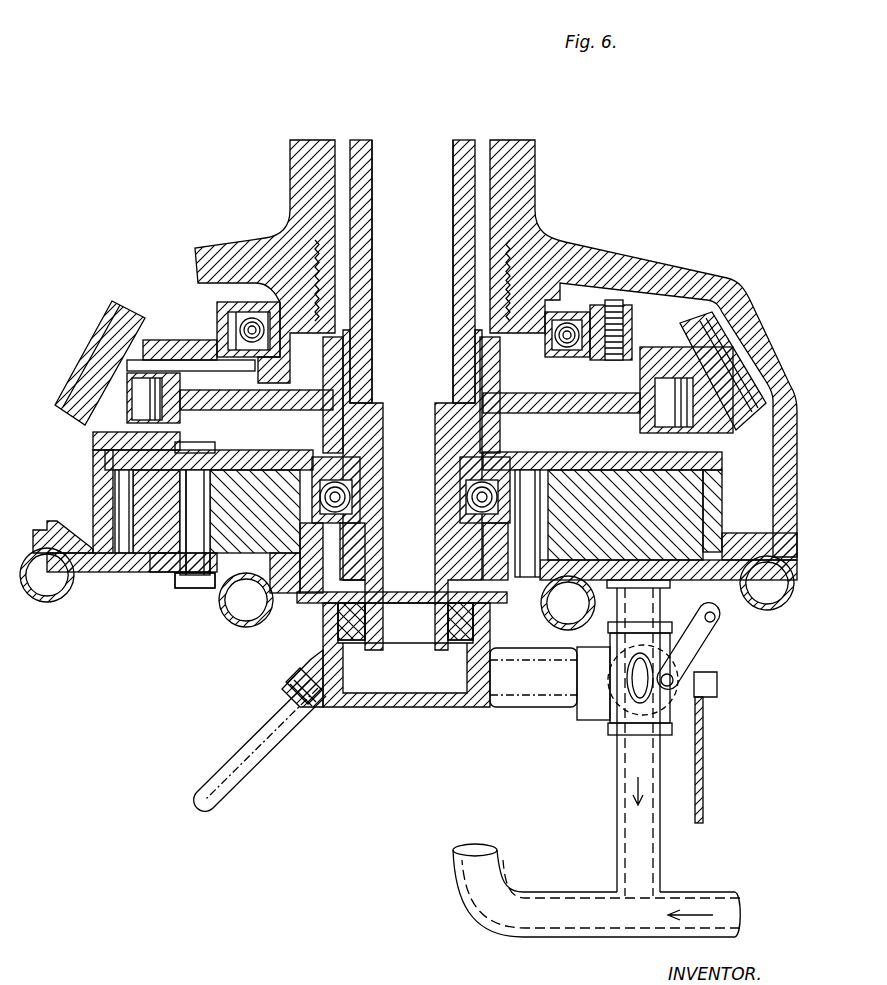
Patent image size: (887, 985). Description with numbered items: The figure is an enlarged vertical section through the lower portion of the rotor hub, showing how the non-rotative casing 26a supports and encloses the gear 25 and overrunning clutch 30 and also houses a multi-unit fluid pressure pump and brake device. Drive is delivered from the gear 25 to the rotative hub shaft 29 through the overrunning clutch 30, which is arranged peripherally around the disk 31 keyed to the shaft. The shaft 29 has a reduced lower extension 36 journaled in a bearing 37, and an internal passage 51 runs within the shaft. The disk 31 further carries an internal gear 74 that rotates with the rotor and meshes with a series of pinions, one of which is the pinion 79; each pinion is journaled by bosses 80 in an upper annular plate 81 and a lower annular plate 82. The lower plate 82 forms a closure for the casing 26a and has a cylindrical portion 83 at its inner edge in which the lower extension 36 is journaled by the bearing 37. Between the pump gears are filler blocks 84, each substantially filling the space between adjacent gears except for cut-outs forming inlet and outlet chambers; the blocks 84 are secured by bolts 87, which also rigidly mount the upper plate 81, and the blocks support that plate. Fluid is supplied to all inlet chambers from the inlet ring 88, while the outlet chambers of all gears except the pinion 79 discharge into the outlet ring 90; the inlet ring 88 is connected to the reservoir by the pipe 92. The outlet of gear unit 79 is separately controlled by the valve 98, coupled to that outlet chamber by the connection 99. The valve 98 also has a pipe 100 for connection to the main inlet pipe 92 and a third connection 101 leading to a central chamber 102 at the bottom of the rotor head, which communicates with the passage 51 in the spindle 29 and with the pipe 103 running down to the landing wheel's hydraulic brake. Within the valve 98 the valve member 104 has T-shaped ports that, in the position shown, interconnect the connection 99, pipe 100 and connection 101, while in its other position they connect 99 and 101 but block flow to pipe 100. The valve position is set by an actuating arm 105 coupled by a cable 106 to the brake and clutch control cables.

The non-rotative casing 26a is at (683, 277).
The rotative hub shaft 29 is at (372, 237).
The internal passage 51 is at (372, 297).
The bearing 37 is at (362, 480).
The reduced lower extension 36 is at (380, 504).
The gear 25 is at (97, 347).
The overrunning clutch 30 is at (135, 405).
The disk 31 is at (267, 410).
The bosses 80 is at (597, 456).
The internal gear 74 is at (118, 488).
The filler blocks 84 is at (150, 540).
The upper annular plate 81 is at (255, 460).
The pinion 79 is at (670, 512).
The outlet ring 90 is at (35, 597).
The inlet ring 88 is at (248, 627).
The lower annular plate 82 is at (163, 562).
The bolts 87 is at (187, 540).
The cylindrical portion 83 is at (222, 573).
The central chamber 102 is at (385, 703).
The pipe 103 is at (240, 786).
The connection 101 is at (525, 700).
The valve 98 is at (680, 714).
The valve member 104 is at (612, 720).
The connection 99 is at (644, 604).
The actuating arm 105 is at (684, 651).
The cable 106 is at (703, 791).
The pipe 100 is at (640, 841).
The pipe 92 is at (555, 908).